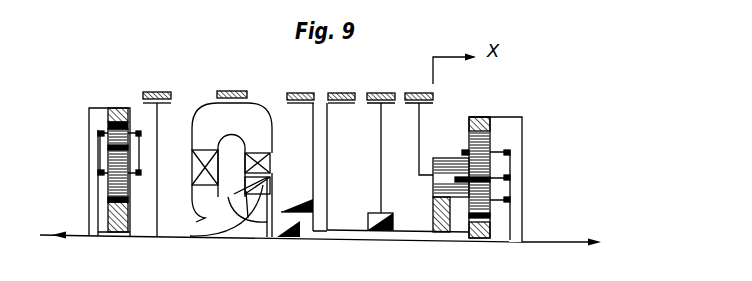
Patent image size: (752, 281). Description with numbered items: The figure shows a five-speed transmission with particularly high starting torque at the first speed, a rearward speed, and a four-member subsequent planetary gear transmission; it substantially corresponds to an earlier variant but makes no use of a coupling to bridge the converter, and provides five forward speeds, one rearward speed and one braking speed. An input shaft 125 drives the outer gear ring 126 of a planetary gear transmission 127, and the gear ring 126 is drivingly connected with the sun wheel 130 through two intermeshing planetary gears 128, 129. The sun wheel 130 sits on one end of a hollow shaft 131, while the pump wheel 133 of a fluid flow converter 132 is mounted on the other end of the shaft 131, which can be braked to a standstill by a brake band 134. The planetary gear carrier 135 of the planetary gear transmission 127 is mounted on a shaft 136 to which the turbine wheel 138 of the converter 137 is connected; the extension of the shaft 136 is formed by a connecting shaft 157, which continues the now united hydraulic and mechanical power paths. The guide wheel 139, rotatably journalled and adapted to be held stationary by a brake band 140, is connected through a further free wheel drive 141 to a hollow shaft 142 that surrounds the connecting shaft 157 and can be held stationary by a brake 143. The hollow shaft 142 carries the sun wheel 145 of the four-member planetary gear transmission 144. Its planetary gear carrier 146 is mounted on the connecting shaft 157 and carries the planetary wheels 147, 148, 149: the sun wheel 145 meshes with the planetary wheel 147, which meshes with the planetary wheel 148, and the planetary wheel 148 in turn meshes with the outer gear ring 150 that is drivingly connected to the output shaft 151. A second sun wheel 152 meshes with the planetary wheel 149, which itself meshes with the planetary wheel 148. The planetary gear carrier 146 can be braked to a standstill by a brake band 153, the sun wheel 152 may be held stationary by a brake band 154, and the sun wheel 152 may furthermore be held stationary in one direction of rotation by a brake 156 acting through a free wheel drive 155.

The input shaft 125 is at (58, 239).
The outer gear ring 126 is at (107, 108).
The planetary gear transmission 127 is at (117, 100).
The planetary gear 128 is at (108, 127).
The planetary gear 129 is at (100, 158).
The sun wheel 130 is at (125, 232).
The hollow shaft 131 is at (158, 237).
The fluid flow converter 132 is at (257, 99).
The pump wheel 133 is at (257, 192).
The brake band 134 is at (151, 91).
The planetary gear carrier 135 is at (92, 190).
The shaft 136 is at (210, 237).
The converter 137 is at (294, 239).
The turbine wheel 138 is at (265, 158).
The guide wheel 139 is at (200, 150).
The brake band 140 is at (222, 90).
The free wheel drive 141 is at (287, 207).
The hollow shaft 142 is at (340, 239).
The brake 143 is at (301, 92).
The four-member planetary gear transmission 144 is at (484, 109).
The sun wheel 145 is at (479, 238).
The planetary gear carrier 146 is at (511, 166).
The planetary wheel 147 is at (489, 212).
The planetary wheel 148 is at (489, 147).
The planetary wheel 149 is at (443, 157).
The outer gear ring 150 is at (476, 116).
The output shaft 151 is at (582, 240).
The second sun wheel 152 is at (440, 220).
The brake band 153 is at (417, 92).
The brake band 154 is at (340, 92).
The free wheel drive 155 is at (395, 229).
The brake 156 is at (380, 92).
The connecting shaft 157 is at (380, 232).